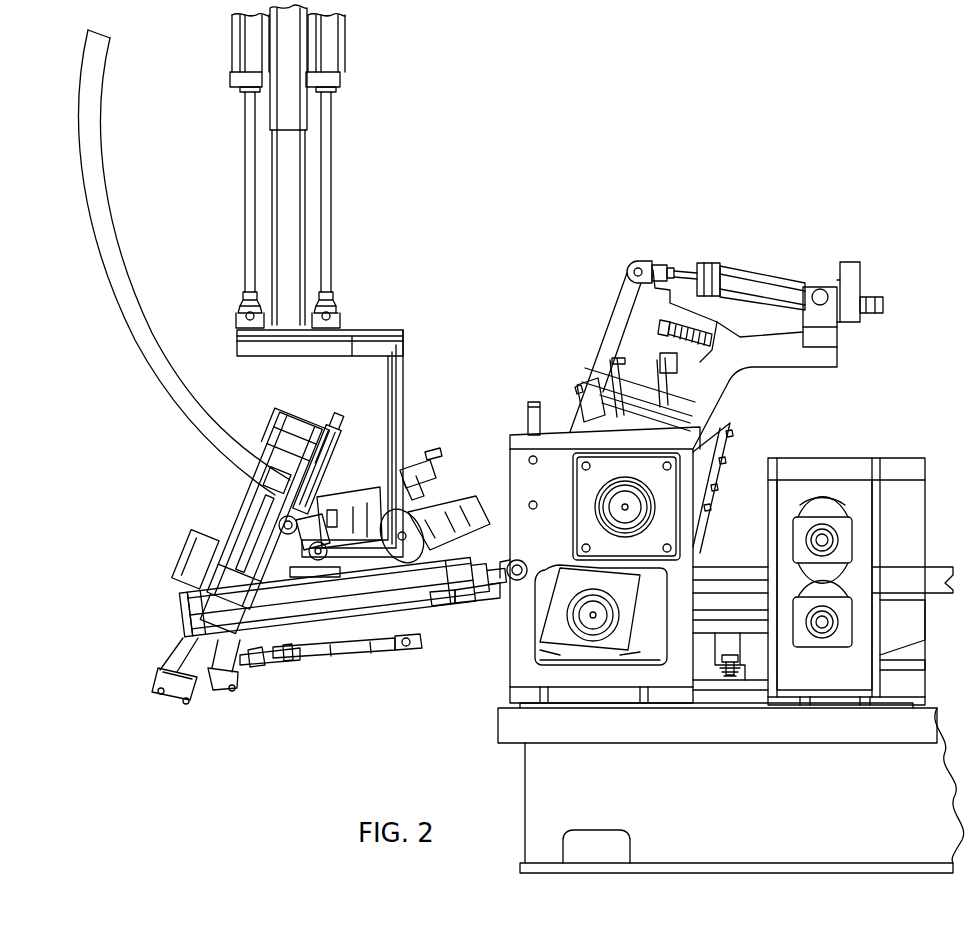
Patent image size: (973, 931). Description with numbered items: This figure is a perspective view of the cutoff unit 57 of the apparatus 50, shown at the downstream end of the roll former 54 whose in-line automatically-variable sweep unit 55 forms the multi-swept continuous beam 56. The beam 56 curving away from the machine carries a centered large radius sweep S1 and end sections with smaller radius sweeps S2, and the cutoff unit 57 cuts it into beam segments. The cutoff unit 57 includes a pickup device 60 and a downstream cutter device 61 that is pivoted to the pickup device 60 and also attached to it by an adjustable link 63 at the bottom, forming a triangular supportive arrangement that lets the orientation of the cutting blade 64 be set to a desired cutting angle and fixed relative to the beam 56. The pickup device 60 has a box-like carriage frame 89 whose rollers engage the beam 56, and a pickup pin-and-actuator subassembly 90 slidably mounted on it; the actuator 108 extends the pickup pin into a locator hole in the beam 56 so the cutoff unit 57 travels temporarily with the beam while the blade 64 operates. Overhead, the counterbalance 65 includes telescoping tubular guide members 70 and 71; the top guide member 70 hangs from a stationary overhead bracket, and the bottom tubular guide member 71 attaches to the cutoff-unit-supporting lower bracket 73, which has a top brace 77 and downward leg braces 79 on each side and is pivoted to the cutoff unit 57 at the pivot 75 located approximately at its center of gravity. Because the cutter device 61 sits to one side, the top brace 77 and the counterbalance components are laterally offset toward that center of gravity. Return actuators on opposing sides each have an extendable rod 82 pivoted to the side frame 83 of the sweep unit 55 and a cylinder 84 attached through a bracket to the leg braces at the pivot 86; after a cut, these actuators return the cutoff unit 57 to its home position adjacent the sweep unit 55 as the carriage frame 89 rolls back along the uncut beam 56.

The apparatus 50 is at (720, 513).
The roll former 54 is at (540, 812).
The in-line automatically-variable sweep unit 55 is at (741, 263).
The continuous beam 56 is at (136, 245).
The cutoff unit 57 is at (426, 270).
The pickup device 60 is at (327, 510).
The cutter device 61 is at (294, 545).
The adjustable link 63 is at (341, 655).
The cutting blade 64 is at (262, 514).
The counterbalance 65 is at (331, 166).
The top guide member 70 is at (292, 45).
The bottom tubular guide member 71 is at (290, 244).
The lower bracket 73 is at (368, 422).
The pivot 75 is at (276, 529).
The top brace 77 is at (369, 332).
The downward leg braces 79 is at (409, 329).
The extendable rod 82 is at (506, 590).
The side frame 83 is at (631, 680).
The cylinder 84 is at (281, 626).
The pivot 86 is at (293, 622).
The carriage frame 89 is at (452, 526).
The pickup pin-and-actuator subassembly 90 is at (427, 474).
The actuator 108 is at (441, 598).
The centered large radius sweep S1 is at (119, 199).
The smaller radius sweep S2 is at (104, 72).